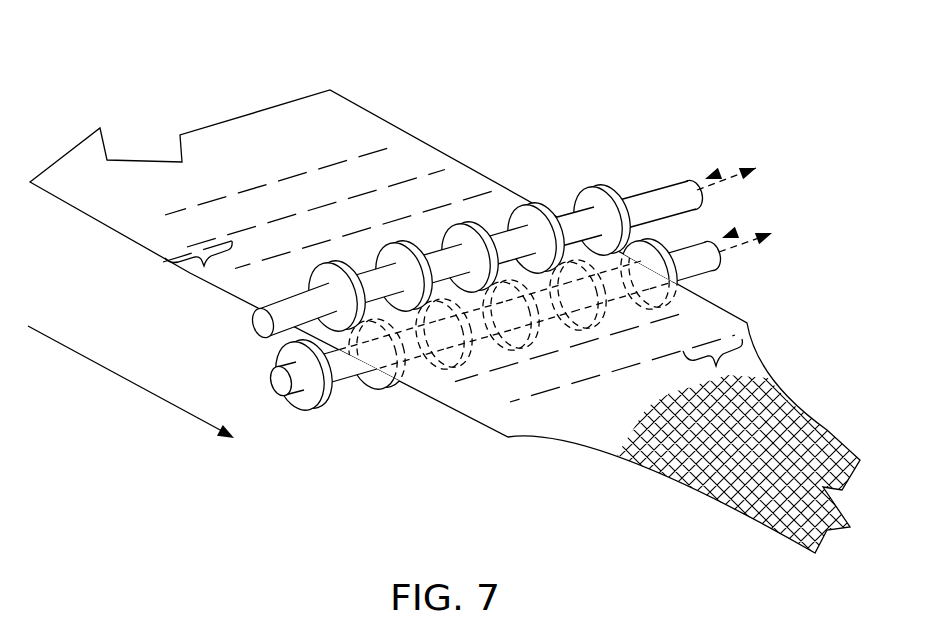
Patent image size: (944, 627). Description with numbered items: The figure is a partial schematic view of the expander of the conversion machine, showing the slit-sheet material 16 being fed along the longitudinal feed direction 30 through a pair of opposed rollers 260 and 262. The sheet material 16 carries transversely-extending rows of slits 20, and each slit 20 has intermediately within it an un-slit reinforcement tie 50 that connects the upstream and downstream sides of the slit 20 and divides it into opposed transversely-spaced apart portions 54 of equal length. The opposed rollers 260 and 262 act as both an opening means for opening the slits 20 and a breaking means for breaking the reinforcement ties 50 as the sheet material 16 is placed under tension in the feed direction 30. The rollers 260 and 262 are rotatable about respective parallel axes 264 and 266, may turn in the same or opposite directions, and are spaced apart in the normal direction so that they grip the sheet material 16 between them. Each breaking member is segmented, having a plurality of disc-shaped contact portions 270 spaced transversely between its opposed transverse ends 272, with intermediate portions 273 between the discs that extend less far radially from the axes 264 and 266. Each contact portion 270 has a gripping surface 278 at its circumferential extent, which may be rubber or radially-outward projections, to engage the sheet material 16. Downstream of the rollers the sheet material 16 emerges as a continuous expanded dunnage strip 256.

The sheet material 16 is at (462, 163).
The slit 20 is at (262, 306).
The longitudinal feed direction 30 is at (153, 397).
The un-slit reinforcement tie 50 is at (333, 140).
The transversely-spaced apart portion 54 is at (257, 187).
The continuous expanded dunnage strip 256 is at (827, 430).
The opposed roller 260 is at (719, 170).
The opposed roller 262 is at (738, 234).
The axis 264 is at (743, 179).
The axis 266 is at (760, 238).
The contact portion 270 is at (633, 227).
The transverse end 272 is at (687, 180).
The intermediate portion 273 is at (477, 231).
The gripping surface 278 is at (537, 203).